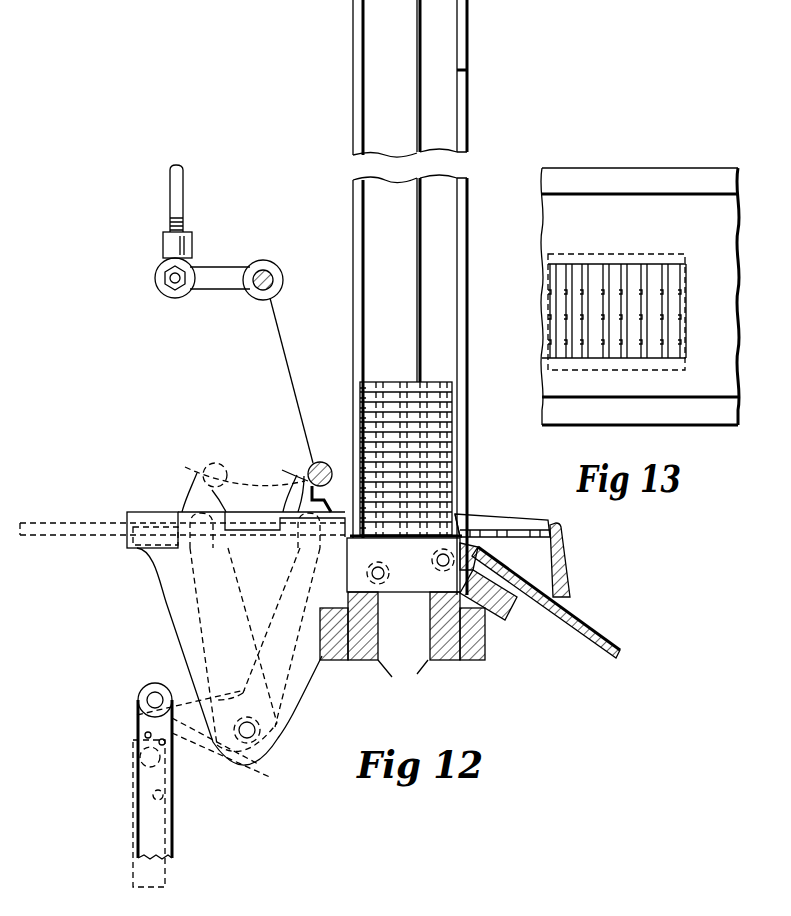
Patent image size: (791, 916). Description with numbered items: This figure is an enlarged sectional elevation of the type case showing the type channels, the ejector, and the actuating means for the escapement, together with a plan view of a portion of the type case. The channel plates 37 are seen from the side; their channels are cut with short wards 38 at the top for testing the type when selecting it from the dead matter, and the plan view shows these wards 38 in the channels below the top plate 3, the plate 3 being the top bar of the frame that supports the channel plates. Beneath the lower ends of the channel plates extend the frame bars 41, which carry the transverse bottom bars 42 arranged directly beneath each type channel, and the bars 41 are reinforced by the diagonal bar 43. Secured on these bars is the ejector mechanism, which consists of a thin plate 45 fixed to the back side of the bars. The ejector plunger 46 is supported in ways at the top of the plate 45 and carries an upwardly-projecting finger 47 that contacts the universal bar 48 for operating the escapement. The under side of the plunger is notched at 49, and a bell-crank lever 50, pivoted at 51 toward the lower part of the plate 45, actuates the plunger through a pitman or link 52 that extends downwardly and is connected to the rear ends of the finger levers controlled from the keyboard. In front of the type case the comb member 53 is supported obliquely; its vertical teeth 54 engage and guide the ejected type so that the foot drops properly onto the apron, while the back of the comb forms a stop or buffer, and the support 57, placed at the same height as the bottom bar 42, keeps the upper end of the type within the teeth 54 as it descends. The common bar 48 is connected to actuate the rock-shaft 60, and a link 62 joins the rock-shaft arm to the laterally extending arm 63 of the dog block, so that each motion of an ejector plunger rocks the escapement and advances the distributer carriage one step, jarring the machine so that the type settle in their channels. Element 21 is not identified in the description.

In FIG. 12, the short wards 38 is at (417, 48).
In FIG. 13, the short wards 38 is at (680, 293).
In FIG. 12, the channel plates 37 is at (390, 216).
In FIG. 13, the channel plates 37 is at (615, 355).
In FIG. 12, the link 62 is at (184, 185).
In FIG. 12, the laterally extending arm 63 is at (222, 267).
In FIG. 12, the rock-shaft 60 is at (274, 266).
In FIG. 12, the universal bar 48 is at (318, 462).
In FIG. 12, the upwardly-projecting finger 47 is at (245, 481).
In FIG. 12, the notch 49 is at (147, 530).
In FIG. 12, the thin plate 45 is at (182, 603).
In FIG. 12, the bell-crank lever 50 is at (182, 690).
In FIG. 12, the pivot 51 is at (247, 740).
In FIG. 12, the pitman or link 52 is at (152, 800).
In FIG. 12, the transverse bottom bars 42 is at (410, 592).
In FIG. 12, the reinforcing bar 43 is at (333, 660).
In FIG. 12, the frame bars 41 is at (403, 676).
In FIG. 12, the teeth 54 is at (522, 527).
In FIG. 12, the ejector plunger 46 is at (462, 537).
In FIG. 12, the comb member 53 is at (566, 565).
In FIG. 12, the support 57 is at (482, 553).
In FIG. 13, the frame member 21 is at (616, 180).
In FIG. 13, the top plate 3 is at (680, 208).